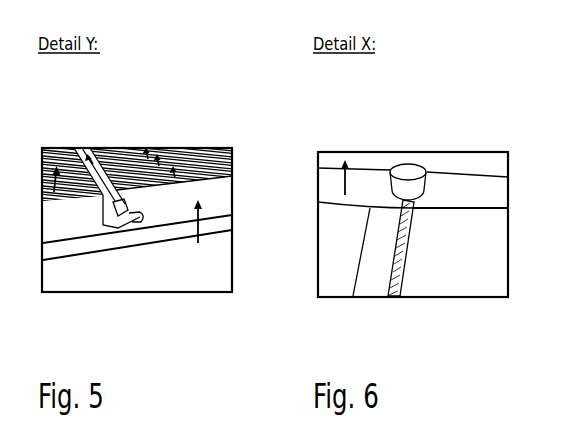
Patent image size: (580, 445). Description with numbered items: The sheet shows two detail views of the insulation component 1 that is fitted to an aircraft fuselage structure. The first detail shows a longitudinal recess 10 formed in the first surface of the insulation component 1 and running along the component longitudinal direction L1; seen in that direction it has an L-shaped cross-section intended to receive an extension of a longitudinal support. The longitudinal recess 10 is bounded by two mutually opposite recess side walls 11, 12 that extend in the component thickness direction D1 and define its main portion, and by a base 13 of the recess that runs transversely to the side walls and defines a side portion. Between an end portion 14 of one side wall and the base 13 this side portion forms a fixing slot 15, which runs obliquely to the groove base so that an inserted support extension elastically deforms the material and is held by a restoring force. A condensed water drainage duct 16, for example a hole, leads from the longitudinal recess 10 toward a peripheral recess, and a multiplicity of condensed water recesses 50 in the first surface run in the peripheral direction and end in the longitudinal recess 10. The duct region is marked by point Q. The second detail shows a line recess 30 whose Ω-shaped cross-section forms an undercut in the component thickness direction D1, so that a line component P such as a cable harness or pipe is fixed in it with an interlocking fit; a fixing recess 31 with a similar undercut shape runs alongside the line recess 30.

In FIG. 5, the insulation component 1 is at (222, 269).
In FIG. 6, the insulation component 1 is at (498, 165).
In FIG. 5, the longitudinal recess 10 is at (87, 155).
In FIG. 5, the recess side wall 11 is at (105, 213).
In FIG. 5, the recess side wall 12 is at (122, 146).
In FIG. 5, the base of the recess 13 is at (118, 228).
In FIG. 5, the end portion 14 is at (232, 176).
In FIG. 5, the fixing slot 15 is at (142, 219).
In FIG. 5, the condensed water drainage duct 16 is at (145, 267).
In FIG. 6, the line recess 30 is at (414, 278).
In FIG. 6, the fixing recess 31 is at (579, 226).
In FIG. 5, the condensed water recess 50 is at (173, 169).
In FIG. 6, the line component P is at (415, 168).
In FIG. 5, the line duct Q is at (137, 257).
In FIG. 5, the component thickness direction D1 is at (200, 230).
In FIG. 6, the component thickness direction D1 is at (343, 185).
In FIG. 5, the component longitudinal direction L1 is at (54, 191).